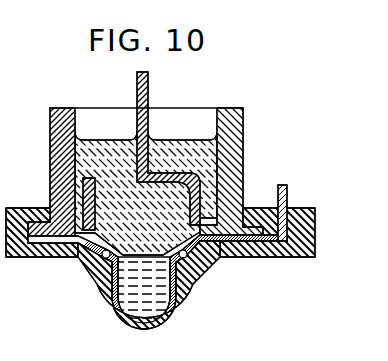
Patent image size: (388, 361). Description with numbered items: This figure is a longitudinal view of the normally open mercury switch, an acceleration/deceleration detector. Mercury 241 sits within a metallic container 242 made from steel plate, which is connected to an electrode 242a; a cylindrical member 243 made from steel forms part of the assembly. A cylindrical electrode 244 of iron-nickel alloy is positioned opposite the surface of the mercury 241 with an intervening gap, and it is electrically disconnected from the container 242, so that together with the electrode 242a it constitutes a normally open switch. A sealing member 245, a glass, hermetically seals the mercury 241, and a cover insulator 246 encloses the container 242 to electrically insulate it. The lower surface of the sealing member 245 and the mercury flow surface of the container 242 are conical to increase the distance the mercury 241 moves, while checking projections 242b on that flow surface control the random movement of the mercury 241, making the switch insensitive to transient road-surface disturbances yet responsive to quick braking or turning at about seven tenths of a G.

The mercury 241 is at (186, 327).
The metallic container 242 is at (177, 296).
The electrode 242a is at (286, 194).
The checking projections 242b is at (106, 259).
The cylindrical member 243 is at (244, 126).
The cylindrical electrode 244 is at (148, 78).
The sealing member 245 is at (204, 138).
The cover insulator 246 is at (311, 234).